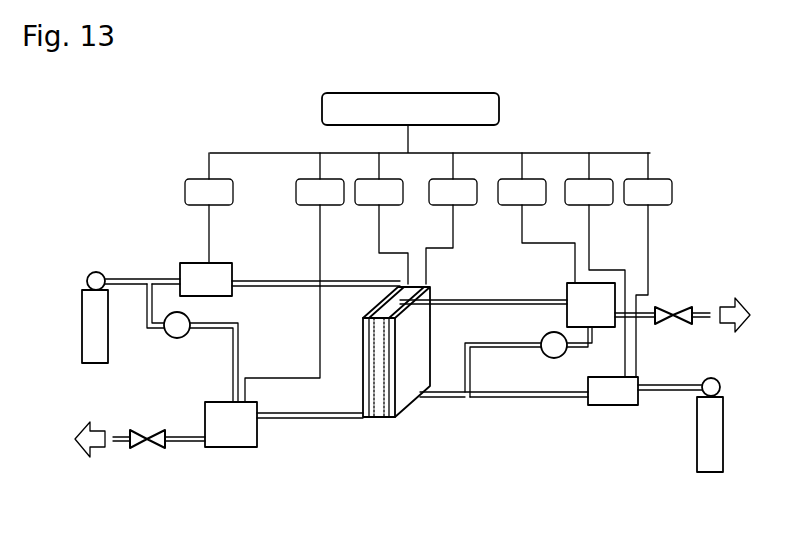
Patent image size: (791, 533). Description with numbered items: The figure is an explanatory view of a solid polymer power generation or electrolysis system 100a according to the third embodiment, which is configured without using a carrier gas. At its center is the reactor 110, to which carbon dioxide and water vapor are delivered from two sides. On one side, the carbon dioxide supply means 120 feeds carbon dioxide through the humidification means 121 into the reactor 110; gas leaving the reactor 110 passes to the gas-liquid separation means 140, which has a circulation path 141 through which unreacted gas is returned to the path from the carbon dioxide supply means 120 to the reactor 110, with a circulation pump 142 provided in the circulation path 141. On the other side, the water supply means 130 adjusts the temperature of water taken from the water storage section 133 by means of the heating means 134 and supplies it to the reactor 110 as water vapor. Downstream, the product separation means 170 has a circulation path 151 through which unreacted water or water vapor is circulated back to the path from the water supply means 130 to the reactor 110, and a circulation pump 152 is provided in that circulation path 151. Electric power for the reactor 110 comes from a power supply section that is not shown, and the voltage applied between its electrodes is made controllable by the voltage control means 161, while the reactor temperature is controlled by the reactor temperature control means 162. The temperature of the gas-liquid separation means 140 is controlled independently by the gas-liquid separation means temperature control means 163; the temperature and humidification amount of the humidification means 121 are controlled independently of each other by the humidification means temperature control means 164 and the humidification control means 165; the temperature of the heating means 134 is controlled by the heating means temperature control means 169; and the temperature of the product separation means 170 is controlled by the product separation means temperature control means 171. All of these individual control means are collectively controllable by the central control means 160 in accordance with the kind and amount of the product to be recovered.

The solid polymer power generation or electrolysis system 100a is at (88, 158).
The reactor 110 is at (403, 418).
The carbon dioxide supply means 120 is at (708, 425).
The humidification means (carbon dioxide side) 121 is at (610, 392).
The water supply means 130 is at (110, 276).
The water storage section 133 is at (95, 325).
The heating means 134 is at (203, 279).
The gas-liquid separation means (carbon dioxide side) 140 is at (590, 305).
The circulation path (carbon dioxide side) 141 is at (512, 352).
The circulation pump (carbon dioxide side) 142 is at (552, 356).
The circulation path (hydrogen side) 151 is at (227, 351).
The circulation pump (hydrogen side) 152 is at (176, 327).
The central control means 160 is at (430, 123).
The voltage control means 161 is at (381, 218).
The reactor temperature control means 162 is at (451, 218).
The gas-liquid separation means temperature control means (carbon dioxide side) 163 is at (536, 218).
The humidification means temperature control means (carbon dioxide side) 164 is at (595, 265).
The humidification control means (carbon dioxide side) 165 is at (648, 265).
The heating means temperature control means 169 is at (209, 208).
The product separation means 170 is at (238, 420).
The product separation means temperature control means 171 is at (294, 277).